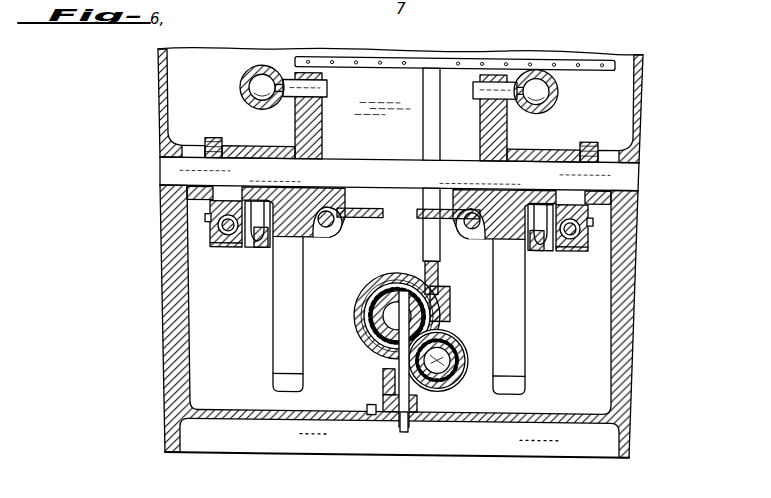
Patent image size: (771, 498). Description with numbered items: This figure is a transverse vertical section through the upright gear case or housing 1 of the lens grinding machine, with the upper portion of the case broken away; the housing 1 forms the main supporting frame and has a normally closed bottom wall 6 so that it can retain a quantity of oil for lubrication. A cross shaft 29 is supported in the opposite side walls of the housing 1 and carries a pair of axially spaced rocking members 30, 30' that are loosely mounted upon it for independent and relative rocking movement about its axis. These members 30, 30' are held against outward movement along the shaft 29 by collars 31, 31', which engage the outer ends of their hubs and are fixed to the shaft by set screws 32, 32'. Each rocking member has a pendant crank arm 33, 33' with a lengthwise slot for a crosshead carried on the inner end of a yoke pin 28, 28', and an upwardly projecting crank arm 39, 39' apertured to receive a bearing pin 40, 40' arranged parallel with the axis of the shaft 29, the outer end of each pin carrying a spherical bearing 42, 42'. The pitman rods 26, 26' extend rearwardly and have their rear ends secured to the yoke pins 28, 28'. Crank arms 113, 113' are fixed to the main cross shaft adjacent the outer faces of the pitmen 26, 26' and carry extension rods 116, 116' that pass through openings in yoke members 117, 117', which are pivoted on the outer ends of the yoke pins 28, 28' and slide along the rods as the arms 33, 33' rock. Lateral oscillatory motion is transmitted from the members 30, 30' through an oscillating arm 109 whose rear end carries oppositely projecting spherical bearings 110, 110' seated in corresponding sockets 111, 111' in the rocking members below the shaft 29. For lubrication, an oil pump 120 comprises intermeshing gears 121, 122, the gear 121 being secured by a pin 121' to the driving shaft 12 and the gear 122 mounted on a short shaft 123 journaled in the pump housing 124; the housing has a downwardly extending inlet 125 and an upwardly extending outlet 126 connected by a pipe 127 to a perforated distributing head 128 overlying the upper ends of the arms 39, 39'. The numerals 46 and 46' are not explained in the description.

The gear case or housing 1 is at (173, 294).
The bottom wall 6 is at (318, 422).
The driving shaft 12 is at (360, 323).
The pitman rod 26 is at (256, 239).
The pitman rod 26' is at (543, 240).
The yoke pin 28 is at (184, 223).
The yoke pin 28' is at (613, 228).
The cross shaft 29 is at (414, 173).
The rocking member 30 is at (259, 142).
The rocking member 30' is at (543, 143).
The collar 31 is at (193, 136).
The collar 31' is at (612, 141).
The set screw 32 is at (214, 137).
The set screw 32' is at (583, 142).
The pendant crank arm 33 is at (273, 314).
The pendant crank arm 33' is at (526, 317).
The crank arm 39 is at (324, 116).
The crank arm 39' is at (479, 118).
The bearing pin 40 is at (316, 87).
The bearing pin 40' is at (499, 89).
The spherical bearing 42 is at (244, 91).
The spherical bearing 42' is at (559, 92).
The ball socket 46 is at (248, 87).
The ball socket 46' is at (554, 89).
The oscillating arm 109 is at (370, 210).
The spherical bearing 110 is at (337, 233).
The spherical bearing 110' is at (477, 238).
The socket 111 is at (348, 226).
The socket 111' is at (460, 232).
The crank arm 113 is at (180, 243).
The crank arm 113' is at (618, 247).
The extension rod 116 is at (220, 247).
The extension rod 116' is at (581, 248).
The yoke member 117 is at (229, 211).
The yoke member 117' is at (566, 216).
The oil pump 120 is at (446, 306).
The pump gear 121 is at (380, 315).
The pin 121' is at (397, 300).
The pump gear 122 is at (455, 384).
The short shaft 123 is at (455, 332).
The pump housing 124 is at (364, 344).
The inlet 125 is at (402, 429).
The outlet 126 is at (440, 294).
The pipe 127 is at (427, 102).
The perforated distributing head 128 is at (413, 55).